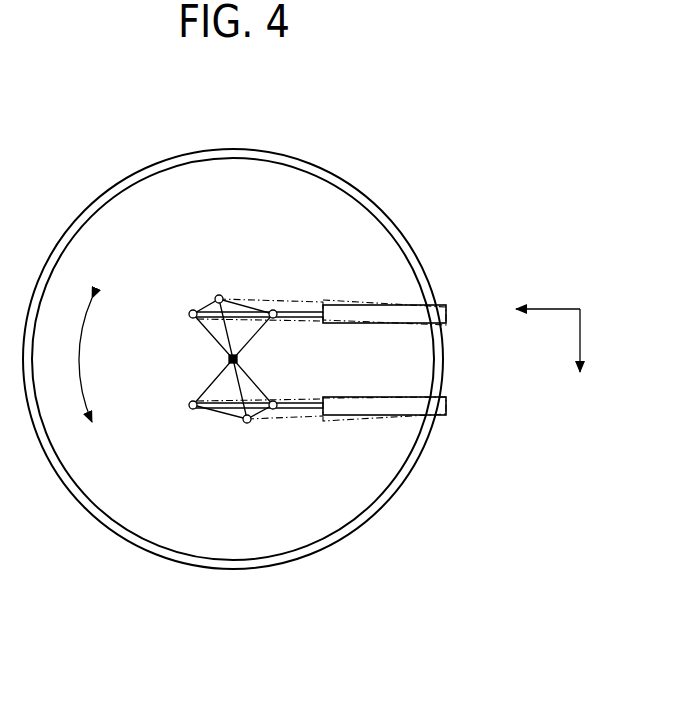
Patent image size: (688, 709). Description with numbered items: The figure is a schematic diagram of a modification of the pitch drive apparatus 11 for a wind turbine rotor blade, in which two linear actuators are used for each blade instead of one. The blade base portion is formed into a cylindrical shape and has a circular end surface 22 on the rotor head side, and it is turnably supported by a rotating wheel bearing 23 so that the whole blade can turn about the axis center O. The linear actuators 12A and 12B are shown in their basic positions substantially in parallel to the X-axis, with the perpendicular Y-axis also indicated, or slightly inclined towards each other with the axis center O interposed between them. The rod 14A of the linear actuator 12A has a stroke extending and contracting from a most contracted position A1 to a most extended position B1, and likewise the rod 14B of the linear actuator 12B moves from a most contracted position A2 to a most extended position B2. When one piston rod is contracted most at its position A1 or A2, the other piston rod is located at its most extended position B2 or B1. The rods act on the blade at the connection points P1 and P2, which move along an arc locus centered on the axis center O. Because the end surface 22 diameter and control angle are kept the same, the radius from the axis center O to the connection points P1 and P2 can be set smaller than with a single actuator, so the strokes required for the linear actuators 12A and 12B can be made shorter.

The pitch drive apparatus 11 is at (457, 277).
The circular end surface 22 is at (277, 193).
The rotating wheel bearing 23 is at (353, 190).
The linear actuator 12A is at (403, 418).
The linear actuator 12B is at (397, 304).
The rod 14A is at (225, 410).
The rod 14B is at (222, 316).
The axis center O is at (229, 360).
The most contracted position A1 is at (276, 402).
The most contracted position A2 is at (275, 310).
The most extended position B1 is at (191, 409).
The most extended position B2 is at (190, 311).
The connection point P1 is at (248, 423).
The connection point P2 is at (218, 295).
The X-axis X is at (539, 307).
The Y-axis Y is at (579, 357).